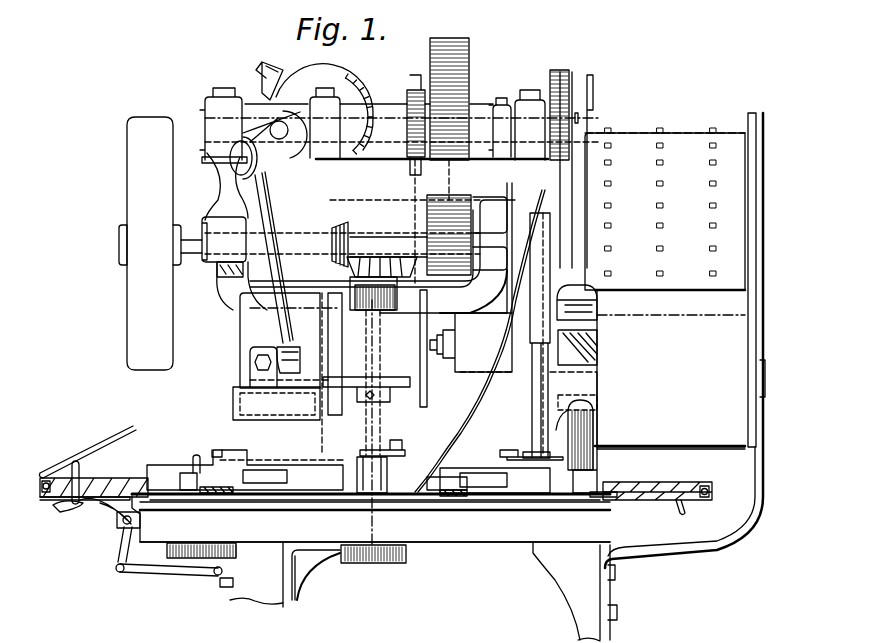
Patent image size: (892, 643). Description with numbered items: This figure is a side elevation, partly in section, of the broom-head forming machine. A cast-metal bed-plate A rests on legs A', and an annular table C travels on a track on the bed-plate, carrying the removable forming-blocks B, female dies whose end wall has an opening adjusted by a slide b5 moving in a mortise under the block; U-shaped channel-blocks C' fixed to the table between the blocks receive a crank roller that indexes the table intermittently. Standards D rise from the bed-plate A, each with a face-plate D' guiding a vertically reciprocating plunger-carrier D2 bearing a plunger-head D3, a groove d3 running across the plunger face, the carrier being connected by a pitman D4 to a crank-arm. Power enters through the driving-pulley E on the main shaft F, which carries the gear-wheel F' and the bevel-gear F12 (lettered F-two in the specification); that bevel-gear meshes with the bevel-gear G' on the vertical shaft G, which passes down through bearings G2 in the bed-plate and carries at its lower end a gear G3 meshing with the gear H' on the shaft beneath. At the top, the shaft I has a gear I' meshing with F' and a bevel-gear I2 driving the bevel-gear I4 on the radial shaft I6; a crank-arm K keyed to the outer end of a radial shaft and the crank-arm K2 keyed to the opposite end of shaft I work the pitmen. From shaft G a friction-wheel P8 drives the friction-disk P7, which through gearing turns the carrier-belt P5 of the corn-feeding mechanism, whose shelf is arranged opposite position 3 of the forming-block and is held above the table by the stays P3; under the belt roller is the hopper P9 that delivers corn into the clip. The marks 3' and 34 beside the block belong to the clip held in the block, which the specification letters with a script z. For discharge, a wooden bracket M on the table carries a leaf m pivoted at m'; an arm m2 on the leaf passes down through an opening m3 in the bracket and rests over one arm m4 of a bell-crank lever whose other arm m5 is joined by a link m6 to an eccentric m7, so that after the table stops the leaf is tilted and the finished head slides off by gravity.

The driving-pulley E is at (160, 243).
The main shaft F is at (226, 231).
The gear-wheel F' is at (421, 226).
The bevel gear F12 is at (352, 237).
The shaft I is at (510, 124).
The gear I' is at (458, 86).
The bevel-gear I2 is at (262, 68).
The bevel-gear I4 is at (352, 90).
The shaft I6 is at (278, 160).
The crank-arm K is at (271, 127).
The crank-arm K2 is at (551, 80).
The standard D is at (480, 341).
The face-plate D' is at (386, 310).
The plunger-carrier D2 is at (531, 335).
The plunger-head D3 is at (605, 357).
The pitman D4 is at (276, 315).
The groove d3 is at (590, 366).
The vertical shaft G is at (385, 422).
The bevel-gear G' is at (383, 312).
The bearings G2 is at (404, 445).
The gear G3 is at (388, 563).
The bracket arms or stays P3 is at (766, 478).
The carrier-belt P5 is at (665, 209).
The friction-disk P7 is at (427, 392).
The friction-wheel P8 is at (393, 385).
The hopper P9 is at (670, 369).
The position 3 is at (590, 433).
The post part 34 is at (574, 393).
The post arm 3' is at (559, 426).
The bed-plate A is at (371, 518).
The legs A' is at (423, 592).
The forming-block B is at (460, 458).
The slide b5 is at (445, 496).
The annular table C is at (375, 518).
The channel-block C' is at (355, 495).
The bracket M is at (130, 480).
The leaf m is at (352, 452).
The pivot m' is at (379, 502).
The arm m2 is at (676, 510).
The opening m3 is at (67, 517).
The bell-crank lever arm m4 is at (110, 520).
The bell-crank lever arm m5 is at (120, 555).
The link m6 is at (170, 575).
The eccentric m7 is at (226, 588).
The gear H' is at (201, 573).